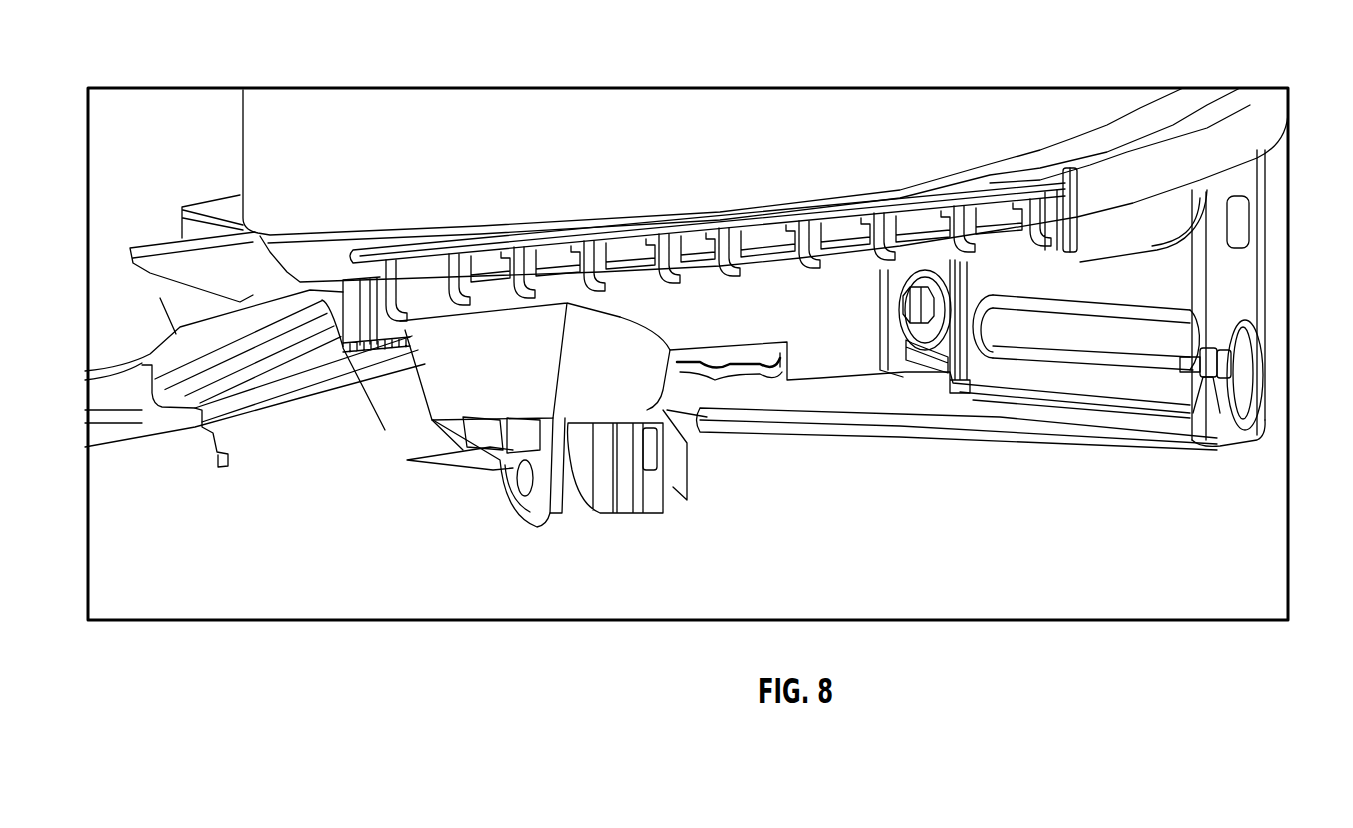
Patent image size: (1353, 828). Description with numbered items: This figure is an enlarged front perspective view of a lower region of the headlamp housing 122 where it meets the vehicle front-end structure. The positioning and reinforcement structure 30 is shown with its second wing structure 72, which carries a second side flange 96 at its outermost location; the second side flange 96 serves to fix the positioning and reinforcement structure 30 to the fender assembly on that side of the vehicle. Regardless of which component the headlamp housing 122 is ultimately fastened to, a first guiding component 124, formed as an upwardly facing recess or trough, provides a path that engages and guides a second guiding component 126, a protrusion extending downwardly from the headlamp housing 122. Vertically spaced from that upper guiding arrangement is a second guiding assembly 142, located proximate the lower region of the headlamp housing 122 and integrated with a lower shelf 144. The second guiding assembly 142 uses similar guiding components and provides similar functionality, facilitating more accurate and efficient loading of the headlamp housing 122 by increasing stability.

The headlamp housing 122 is at (950, 74).
The second side flange 96 is at (1237, 280).
The first guiding component 124 is at (188, 393).
The second guiding component 126 is at (363, 350).
The lower shelf 144 is at (312, 353).
The second guiding assembly 142 is at (395, 367).
The positioning and reinforcement structure 30 is at (836, 335).
The second wing structure 72 is at (1100, 380).